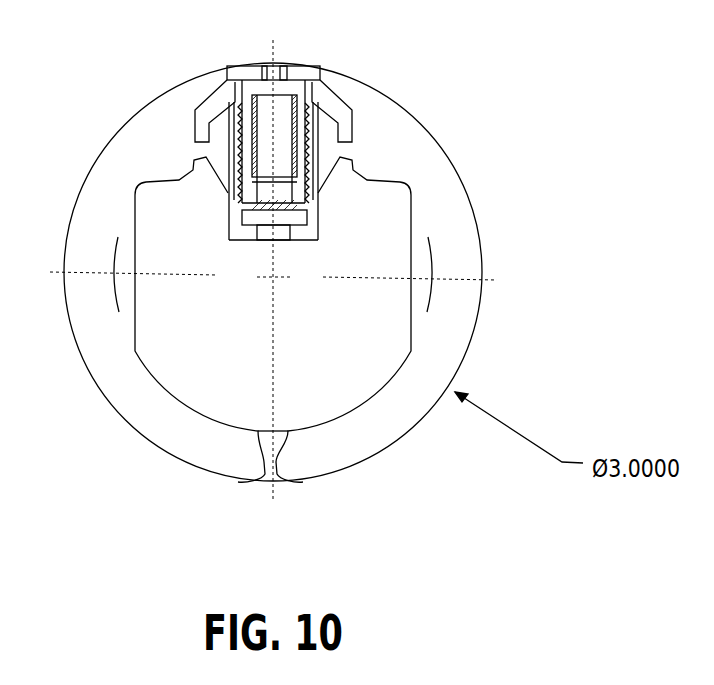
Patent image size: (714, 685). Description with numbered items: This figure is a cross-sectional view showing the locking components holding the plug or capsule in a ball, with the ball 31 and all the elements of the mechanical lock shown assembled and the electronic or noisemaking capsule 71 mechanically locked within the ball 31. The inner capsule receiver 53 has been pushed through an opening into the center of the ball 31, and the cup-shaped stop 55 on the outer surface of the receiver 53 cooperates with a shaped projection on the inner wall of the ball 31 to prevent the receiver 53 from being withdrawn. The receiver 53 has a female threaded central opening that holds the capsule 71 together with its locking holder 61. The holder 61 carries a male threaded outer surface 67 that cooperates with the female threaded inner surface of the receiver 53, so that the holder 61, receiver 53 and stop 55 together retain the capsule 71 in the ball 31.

The ball 31 is at (490, 202).
The inner capsule receiver 53 is at (304, 244).
The cup-shaped stop 55 is at (322, 176).
The locking holder 61 is at (298, 66).
The male threaded outer surface 67 is at (343, 102).
The capsule 71 is at (252, 145).